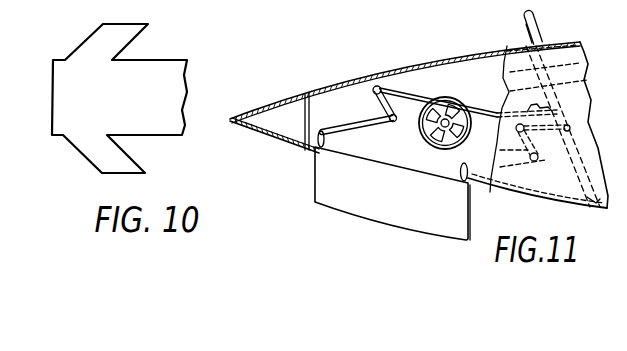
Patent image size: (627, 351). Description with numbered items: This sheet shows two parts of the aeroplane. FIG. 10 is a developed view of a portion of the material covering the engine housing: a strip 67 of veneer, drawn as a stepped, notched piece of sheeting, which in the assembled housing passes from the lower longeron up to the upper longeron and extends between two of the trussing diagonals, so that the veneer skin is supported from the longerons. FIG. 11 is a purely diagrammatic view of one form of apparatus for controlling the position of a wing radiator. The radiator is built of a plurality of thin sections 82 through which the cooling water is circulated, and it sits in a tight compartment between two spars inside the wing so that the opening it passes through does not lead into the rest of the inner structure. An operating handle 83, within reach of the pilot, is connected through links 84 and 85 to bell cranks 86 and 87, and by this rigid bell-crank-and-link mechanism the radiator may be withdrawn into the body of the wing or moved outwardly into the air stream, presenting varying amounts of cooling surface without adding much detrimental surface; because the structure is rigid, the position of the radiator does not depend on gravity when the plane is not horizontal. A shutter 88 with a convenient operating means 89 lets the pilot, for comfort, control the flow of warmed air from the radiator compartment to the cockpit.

In FIG. 10, the strip of veneer 67 is at (120, 155).
In FIG. 11, the radiator section 82 is at (392, 193).
In FIG. 11, the operating handle 83 is at (587, 80).
In FIG. 11, the link 84 is at (433, 100).
In FIG. 11, the link 85 is at (535, 150).
In FIG. 11, the bell crank 86 is at (378, 103).
In FIG. 11, the bell crank 87 is at (498, 182).
In FIG. 11, the shutter 88 is at (433, 143).
In FIG. 11, the operating means 89 is at (510, 72).